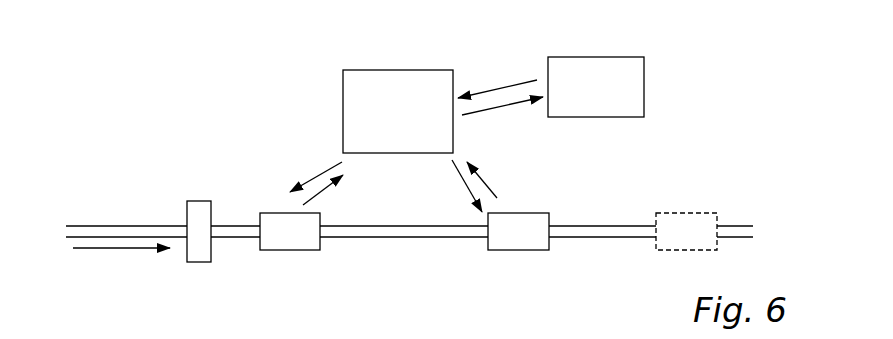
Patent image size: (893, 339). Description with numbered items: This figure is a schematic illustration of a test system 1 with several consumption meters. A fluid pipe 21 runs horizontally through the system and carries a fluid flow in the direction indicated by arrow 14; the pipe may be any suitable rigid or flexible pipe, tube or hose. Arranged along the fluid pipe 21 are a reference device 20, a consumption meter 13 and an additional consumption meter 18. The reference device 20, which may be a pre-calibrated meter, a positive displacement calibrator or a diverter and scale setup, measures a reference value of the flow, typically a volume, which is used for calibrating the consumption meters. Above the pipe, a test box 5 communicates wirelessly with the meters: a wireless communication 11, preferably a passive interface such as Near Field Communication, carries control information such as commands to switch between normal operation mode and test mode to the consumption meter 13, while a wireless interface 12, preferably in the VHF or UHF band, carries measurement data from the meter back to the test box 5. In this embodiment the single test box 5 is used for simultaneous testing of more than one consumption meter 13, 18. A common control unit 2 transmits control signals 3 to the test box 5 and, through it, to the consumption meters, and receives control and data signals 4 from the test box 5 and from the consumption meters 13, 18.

The test system 1 is at (173, 73).
The common control unit 2 is at (644, 80).
The control signals 3 is at (493, 92).
The control and data signals 4 is at (500, 107).
The test box 5 is at (343, 117).
The wireless communication 11 is at (322, 170).
The wireless interface 12 is at (320, 195).
The consumption meter 13 is at (298, 250).
The arrow 14 is at (113, 250).
The additional consumption meter 18 is at (527, 250).
The reference device 20 is at (200, 201).
The fluid pipe 21 is at (127, 225).